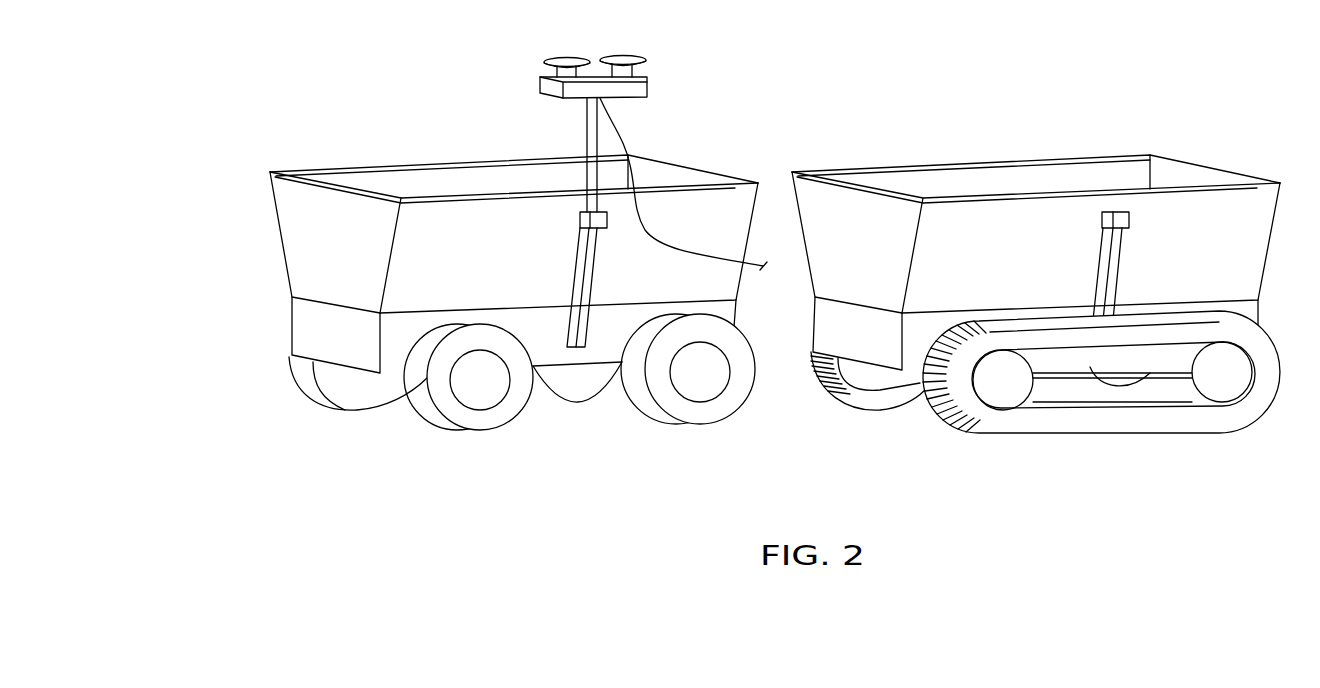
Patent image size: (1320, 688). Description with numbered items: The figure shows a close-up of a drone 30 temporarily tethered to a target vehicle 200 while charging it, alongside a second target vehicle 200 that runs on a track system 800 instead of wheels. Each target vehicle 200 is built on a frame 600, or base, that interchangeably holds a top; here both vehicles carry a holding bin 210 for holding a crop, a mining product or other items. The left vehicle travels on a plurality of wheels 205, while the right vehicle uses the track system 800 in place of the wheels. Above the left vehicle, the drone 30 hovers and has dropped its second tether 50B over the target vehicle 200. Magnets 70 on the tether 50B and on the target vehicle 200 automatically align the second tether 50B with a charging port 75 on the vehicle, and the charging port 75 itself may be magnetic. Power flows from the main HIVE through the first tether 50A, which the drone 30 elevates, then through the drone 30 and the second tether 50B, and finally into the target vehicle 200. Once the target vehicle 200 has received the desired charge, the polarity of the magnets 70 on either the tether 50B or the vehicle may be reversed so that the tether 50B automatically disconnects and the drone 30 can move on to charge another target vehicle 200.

The drone 30 is at (540, 83).
The holding bin 210 is at (378, 178).
The second tether 50B is at (587, 133).
The first tether 50A is at (633, 140).
The target vehicle 200 is at (482, 248).
The magnets 70 is at (579, 215).
The charging port 75 is at (598, 262).
The frame 600 is at (303, 320).
The wheels 205 is at (477, 420).
The track system 800 is at (1110, 432).